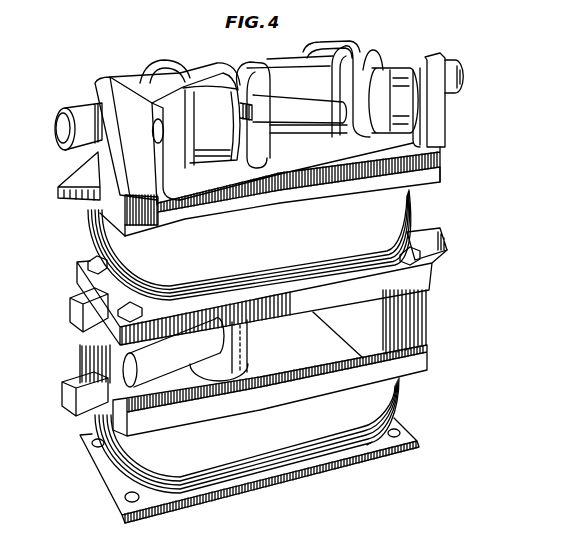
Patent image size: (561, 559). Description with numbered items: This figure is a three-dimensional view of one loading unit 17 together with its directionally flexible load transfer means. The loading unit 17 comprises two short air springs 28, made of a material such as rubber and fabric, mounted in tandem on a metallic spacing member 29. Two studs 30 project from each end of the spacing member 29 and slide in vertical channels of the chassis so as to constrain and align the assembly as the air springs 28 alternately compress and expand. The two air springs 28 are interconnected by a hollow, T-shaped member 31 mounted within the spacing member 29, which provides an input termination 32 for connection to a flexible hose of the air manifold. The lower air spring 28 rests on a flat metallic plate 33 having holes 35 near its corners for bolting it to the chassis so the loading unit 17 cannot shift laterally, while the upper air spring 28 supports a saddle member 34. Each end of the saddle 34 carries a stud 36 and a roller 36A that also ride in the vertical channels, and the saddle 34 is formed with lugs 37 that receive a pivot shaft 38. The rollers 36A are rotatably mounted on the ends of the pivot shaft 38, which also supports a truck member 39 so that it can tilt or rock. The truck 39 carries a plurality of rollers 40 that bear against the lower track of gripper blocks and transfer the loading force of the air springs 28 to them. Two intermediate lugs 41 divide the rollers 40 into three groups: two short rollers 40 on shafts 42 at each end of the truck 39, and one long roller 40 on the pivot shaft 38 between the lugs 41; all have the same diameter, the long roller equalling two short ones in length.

The loading unit 17 is at (495, 195).
The air spring 28 is at (382, 212).
The spacing member 29 is at (417, 317).
The stud 30 is at (80, 305).
The hollow member 31 is at (237, 355).
The input termination 32 is at (120, 376).
The flat metallic plate 33 is at (367, 445).
The saddle member 34 is at (438, 162).
The hole 35 is at (125, 500).
The stud 36 is at (55, 190).
The roller 36A is at (78, 110).
The lug 37 is at (97, 92).
The pivot shaft 38 is at (65, 132).
The truck member 39 is at (417, 132).
The roller 40 is at (197, 100).
The intermediate lug 41 is at (362, 125).
The shaft 42 is at (155, 135).